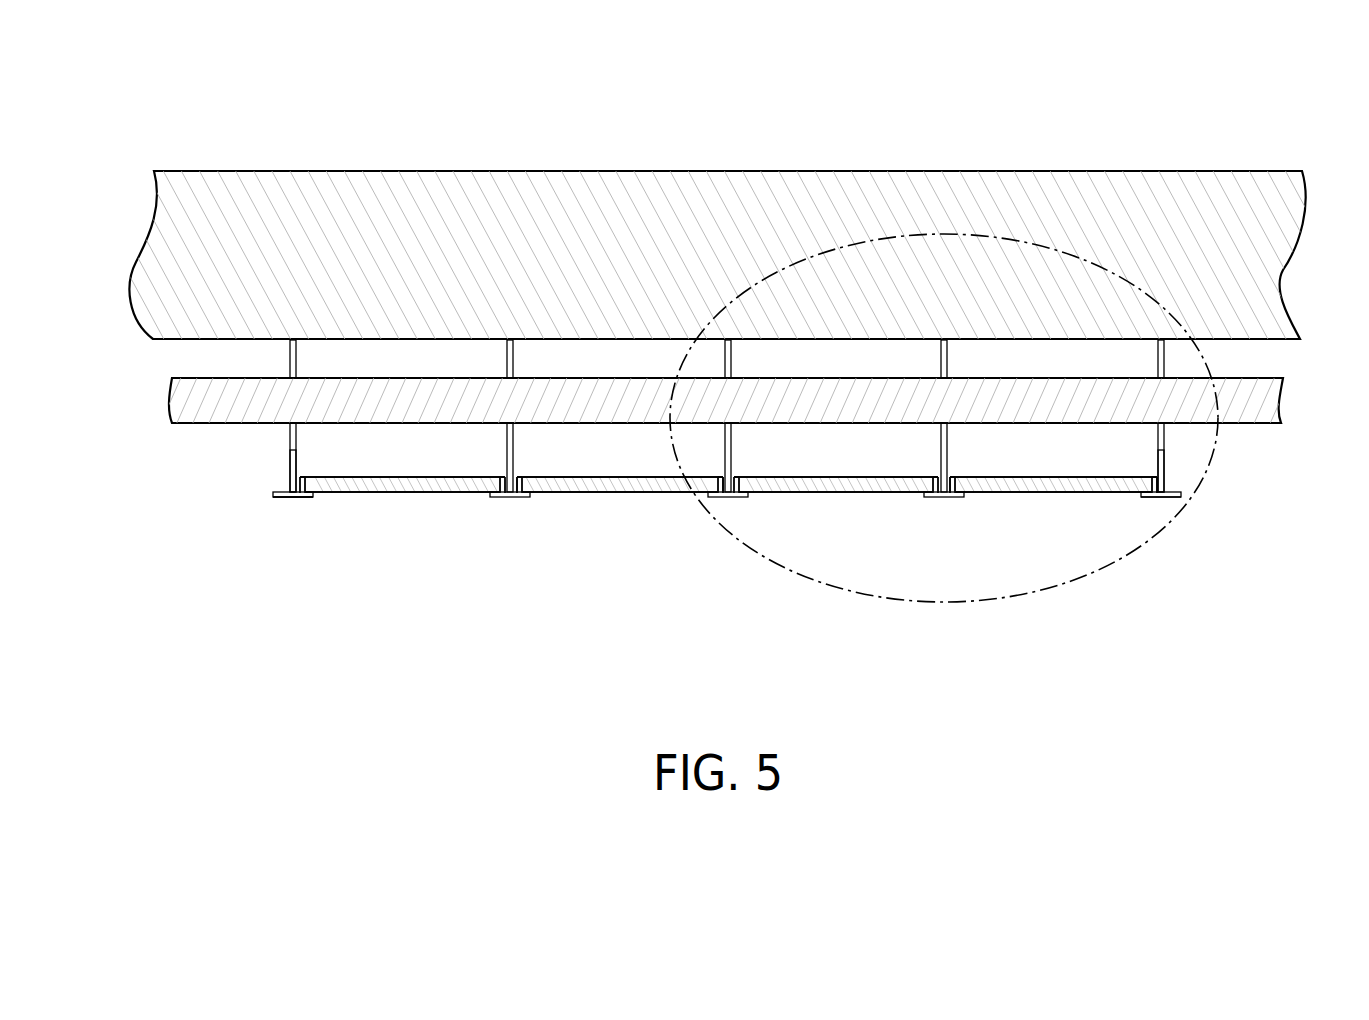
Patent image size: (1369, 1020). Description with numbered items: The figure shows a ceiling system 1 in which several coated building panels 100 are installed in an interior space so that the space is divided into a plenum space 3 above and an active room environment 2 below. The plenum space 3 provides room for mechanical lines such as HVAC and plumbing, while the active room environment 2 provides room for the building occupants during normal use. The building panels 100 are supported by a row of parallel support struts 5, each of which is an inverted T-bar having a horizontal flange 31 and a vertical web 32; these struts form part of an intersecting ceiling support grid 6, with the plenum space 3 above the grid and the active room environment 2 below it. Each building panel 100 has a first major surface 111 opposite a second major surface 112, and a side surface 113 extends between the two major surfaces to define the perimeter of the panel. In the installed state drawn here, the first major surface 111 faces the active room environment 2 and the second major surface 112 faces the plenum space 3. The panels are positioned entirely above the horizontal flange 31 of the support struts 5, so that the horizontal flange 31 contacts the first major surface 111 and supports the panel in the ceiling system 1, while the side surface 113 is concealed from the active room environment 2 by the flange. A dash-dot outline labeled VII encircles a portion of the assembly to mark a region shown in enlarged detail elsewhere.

The ceiling system 1 is at (128, 148).
The active room environment 2 is at (250, 591).
The plenum space 3 is at (130, 375).
The support strut 5 is at (290, 438).
The ceiling support grid 6 is at (130, 488).
The horizontal flange 31 is at (292, 497).
The vertical web 32 is at (288, 466).
The coated building panel 100 is at (432, 505).
The first major surface 111 is at (480, 496).
The second major surface 112 is at (402, 478).
The side surface 113 is at (518, 489).
The detail region for FIG. 7 VII is at (1108, 570).